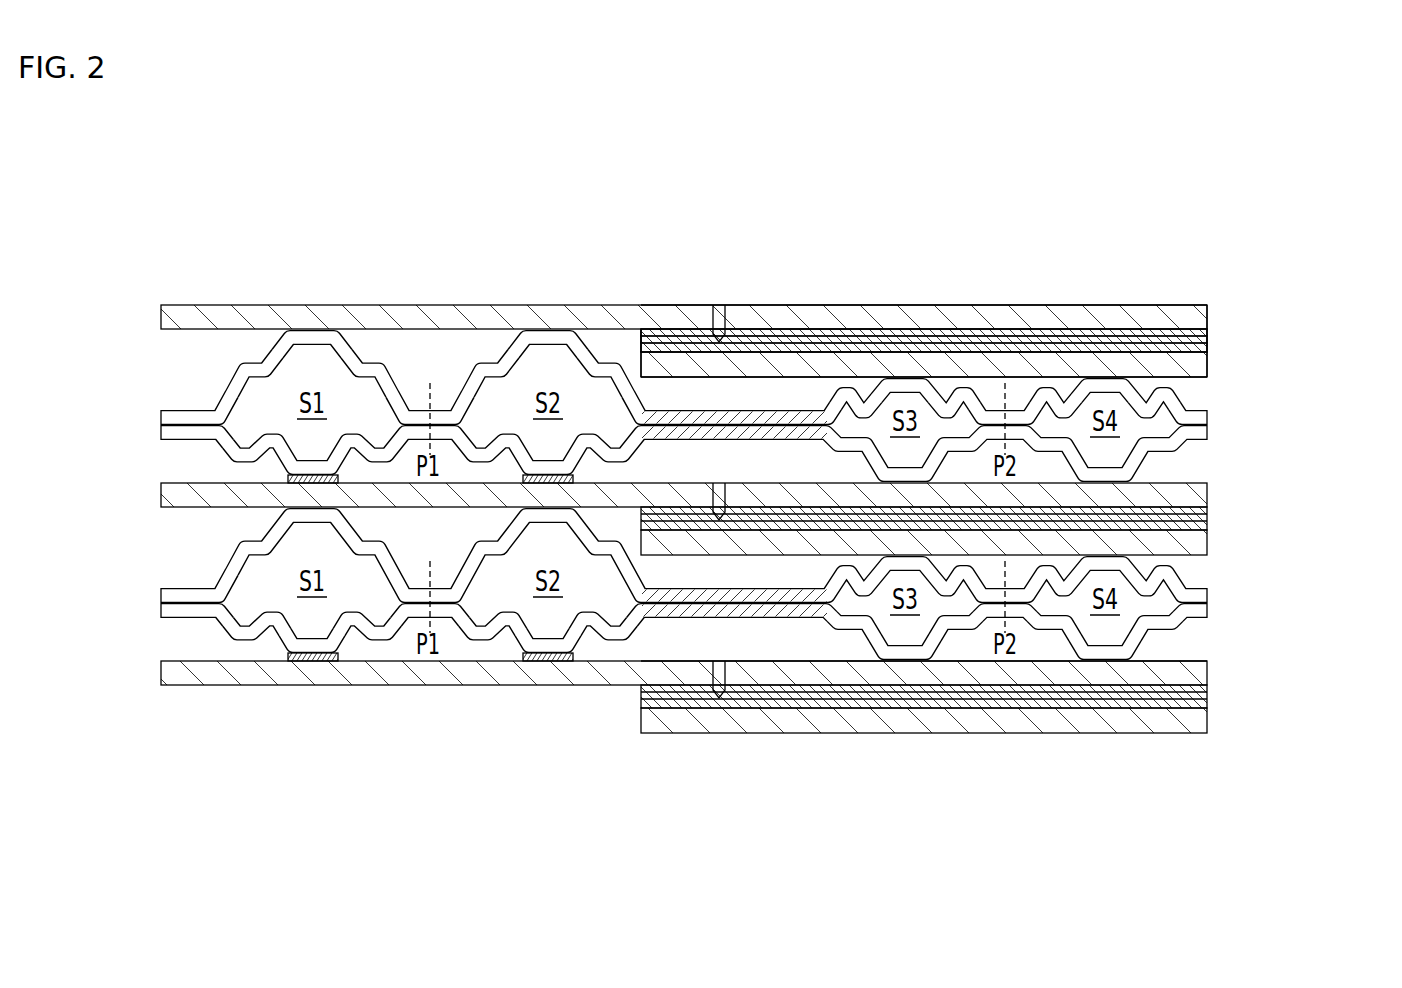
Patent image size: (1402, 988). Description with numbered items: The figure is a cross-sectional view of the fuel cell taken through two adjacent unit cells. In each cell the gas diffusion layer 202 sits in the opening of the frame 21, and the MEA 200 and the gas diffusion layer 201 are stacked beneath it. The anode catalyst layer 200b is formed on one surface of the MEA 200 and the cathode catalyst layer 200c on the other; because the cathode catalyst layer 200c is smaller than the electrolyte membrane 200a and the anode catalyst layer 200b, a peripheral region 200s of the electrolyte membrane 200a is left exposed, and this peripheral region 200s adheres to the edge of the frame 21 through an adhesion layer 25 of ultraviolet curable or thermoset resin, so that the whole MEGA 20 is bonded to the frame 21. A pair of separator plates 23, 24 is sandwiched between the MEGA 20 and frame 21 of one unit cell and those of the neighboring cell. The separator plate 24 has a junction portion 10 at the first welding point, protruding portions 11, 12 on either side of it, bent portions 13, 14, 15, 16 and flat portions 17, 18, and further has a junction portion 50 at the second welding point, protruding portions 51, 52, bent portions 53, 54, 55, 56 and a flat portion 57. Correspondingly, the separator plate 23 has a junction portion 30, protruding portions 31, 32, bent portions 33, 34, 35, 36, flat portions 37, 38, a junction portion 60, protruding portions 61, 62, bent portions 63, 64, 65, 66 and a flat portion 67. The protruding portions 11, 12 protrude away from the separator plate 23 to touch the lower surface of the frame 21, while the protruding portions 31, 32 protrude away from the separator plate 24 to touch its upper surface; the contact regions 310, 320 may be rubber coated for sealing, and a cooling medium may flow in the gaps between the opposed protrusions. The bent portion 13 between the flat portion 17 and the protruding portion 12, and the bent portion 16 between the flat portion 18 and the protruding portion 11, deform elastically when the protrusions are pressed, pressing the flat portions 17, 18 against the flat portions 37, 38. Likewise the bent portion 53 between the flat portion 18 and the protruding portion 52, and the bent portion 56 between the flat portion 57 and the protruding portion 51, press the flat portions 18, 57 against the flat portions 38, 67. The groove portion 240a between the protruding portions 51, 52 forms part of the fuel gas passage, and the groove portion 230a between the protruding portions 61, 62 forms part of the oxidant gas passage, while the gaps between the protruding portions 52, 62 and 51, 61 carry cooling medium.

The junction portion 10 is at (433, 410).
The protruding portion 11 is at (548, 337).
The protruding portion 12 is at (308, 337).
The bent portion 13 is at (268, 358).
The bent portion 14 is at (361, 362).
The bent portion 15 is at (490, 366).
The bent portion 16 is at (602, 362).
The flat portion 17 is at (195, 410).
The flat portion 18 is at (747, 417).
The MEGA 20 is at (1343, 263).
The frame 21 is at (631, 312).
The separator plate 23 is at (160, 434).
The separator plate 24 is at (160, 417).
The adhesion layer 25 is at (688, 343).
The junction portion 30 is at (447, 614).
The protruding portion 31 is at (548, 647).
The protruding portion 32 is at (310, 647).
The bent portion 33 is at (247, 636).
The bent portion 34 is at (366, 636).
The bent portion 35 is at (482, 636).
The bent portion 36 is at (603, 636).
The flat portion 37 is at (184, 620).
The flat portion 38 is at (684, 614).
The junction portion 50 is at (1013, 410).
The protruding portion 51 is at (1103, 384).
The protruding portion 52 is at (908, 384).
The bent portion 53 is at (862, 398).
The bent portion 54 is at (947, 396).
The bent portion 55 is at (1062, 398).
The bent portion 56 is at (1147, 398).
The flat portion 57 is at (1190, 410).
The junction portion 60 is at (1015, 614).
The protruding portion 61 is at (1105, 652).
The protruding portion 62 is at (905, 652).
The bent portion 63 is at (848, 624).
The bent portion 64 is at (957, 624).
The bent portion 65 is at (1050, 624).
The bent portion 66 is at (1160, 624).
The flat portion 67 is at (1192, 614).
The MEA 200 is at (1288, 298).
The electrolyte membrane 200a is at (1202, 340).
The anode catalyst layer 200b is at (1202, 347).
The cathode catalyst layer 200c is at (1202, 333).
The peripheral region 200s is at (719, 330).
The gas diffusion layer 201 is at (1203, 365).
The gas diffusion layer 202 is at (1185, 314).
The groove portion 230a is at (981, 645).
The groove portion 240a is at (981, 380).
The region 310 is at (525, 664).
The region 320 is at (330, 664).